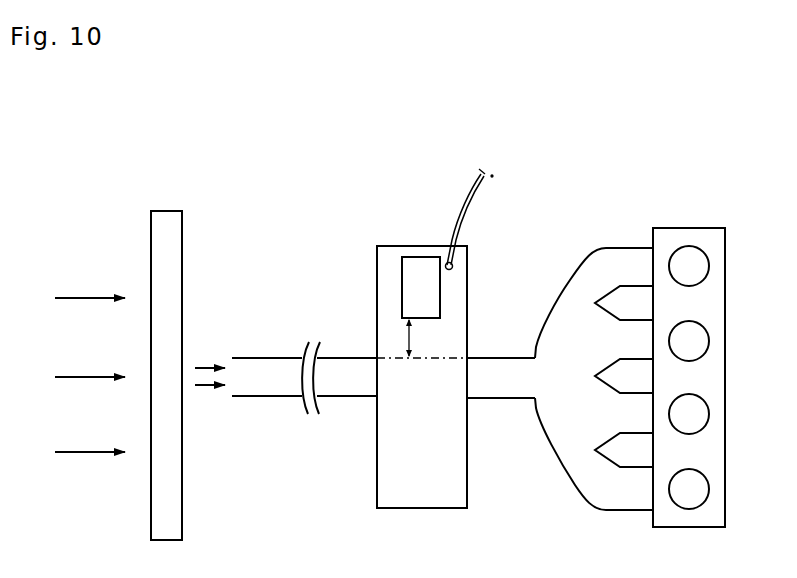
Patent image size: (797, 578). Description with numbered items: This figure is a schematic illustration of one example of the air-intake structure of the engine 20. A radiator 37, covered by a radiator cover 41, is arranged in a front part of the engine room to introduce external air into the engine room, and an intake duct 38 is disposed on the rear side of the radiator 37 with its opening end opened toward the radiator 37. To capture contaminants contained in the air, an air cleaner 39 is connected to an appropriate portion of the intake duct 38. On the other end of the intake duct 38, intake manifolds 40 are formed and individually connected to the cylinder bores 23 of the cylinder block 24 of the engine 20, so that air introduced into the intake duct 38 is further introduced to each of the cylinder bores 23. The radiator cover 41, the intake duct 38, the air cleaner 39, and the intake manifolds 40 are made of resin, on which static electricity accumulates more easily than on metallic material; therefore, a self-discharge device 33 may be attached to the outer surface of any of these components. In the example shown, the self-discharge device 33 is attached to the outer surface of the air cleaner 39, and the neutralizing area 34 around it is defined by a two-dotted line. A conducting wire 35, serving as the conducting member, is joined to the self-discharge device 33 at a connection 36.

The radiator 37 is at (195, 324).
The radiator cover 41 is at (170, 241).
The intake duct 38 is at (256, 386).
The neutralizing area 34 is at (414, 348).
The self-discharge device 33 is at (422, 266).
The conducting wire 35 is at (476, 178).
The connection 36 is at (449, 272).
The air cleaner 39 is at (422, 495).
The intake manifolds 40 is at (593, 234).
The engine 20 is at (711, 353).
The cylinder block 24 is at (689, 377).
The cylinder bores 23 is at (700, 265).